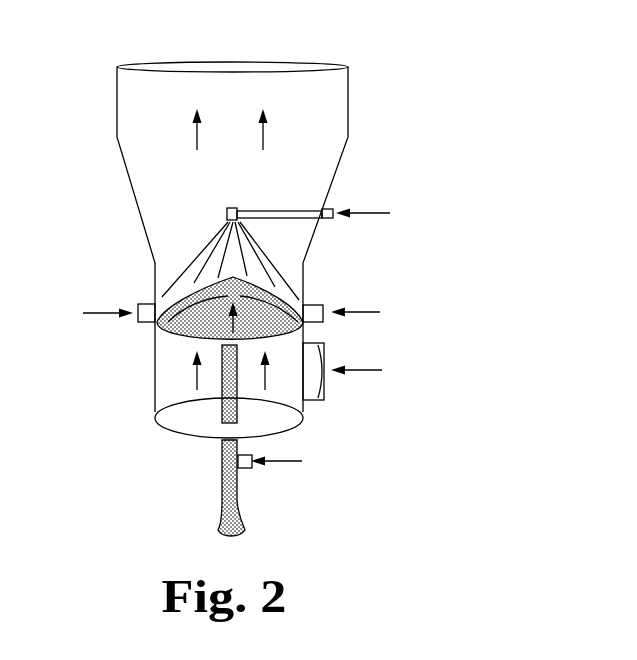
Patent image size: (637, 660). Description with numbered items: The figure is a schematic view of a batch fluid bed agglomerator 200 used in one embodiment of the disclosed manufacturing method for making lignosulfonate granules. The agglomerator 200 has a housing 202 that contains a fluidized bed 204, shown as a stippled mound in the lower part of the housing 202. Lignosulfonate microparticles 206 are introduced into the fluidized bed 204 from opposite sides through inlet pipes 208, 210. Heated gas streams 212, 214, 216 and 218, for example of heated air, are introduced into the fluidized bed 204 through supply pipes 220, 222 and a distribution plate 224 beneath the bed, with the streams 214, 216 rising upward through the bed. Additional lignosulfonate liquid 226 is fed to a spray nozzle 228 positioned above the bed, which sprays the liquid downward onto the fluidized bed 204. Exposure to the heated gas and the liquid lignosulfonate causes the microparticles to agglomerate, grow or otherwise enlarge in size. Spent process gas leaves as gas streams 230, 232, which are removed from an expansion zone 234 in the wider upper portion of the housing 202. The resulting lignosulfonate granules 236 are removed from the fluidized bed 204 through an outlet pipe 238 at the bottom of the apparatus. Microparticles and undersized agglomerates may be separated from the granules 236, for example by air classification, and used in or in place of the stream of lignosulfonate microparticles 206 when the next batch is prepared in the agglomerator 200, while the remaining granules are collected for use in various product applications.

The batch fluid bed agglomerator 200 is at (278, 220).
The housing 202 is at (348, 125).
The fluidized bed 204 is at (290, 306).
The lignosulfonate microparticles 206 is at (93, 313).
The inlet pipe 208 is at (148, 322).
The inlet pipe 210 is at (312, 325).
The heated gas stream 212 is at (367, 372).
The heated gas stream 214 is at (197, 390).
The heated gas stream 216 is at (265, 390).
The heated gas stream 218 is at (287, 462).
The supply pipe 220 is at (325, 402).
The supply pipe 222 is at (245, 472).
The distribution plate 224 is at (172, 330).
The lignosulfonate liquid 226 is at (380, 215).
The spray nozzle 228 is at (228, 212).
The spent process gas stream 230 is at (197, 143).
The spent process gas stream 232 is at (264, 140).
The expansion zone 234 is at (310, 173).
The lignosulfonate granules 236 is at (222, 502).
The outlet pipe 238 is at (188, 452).